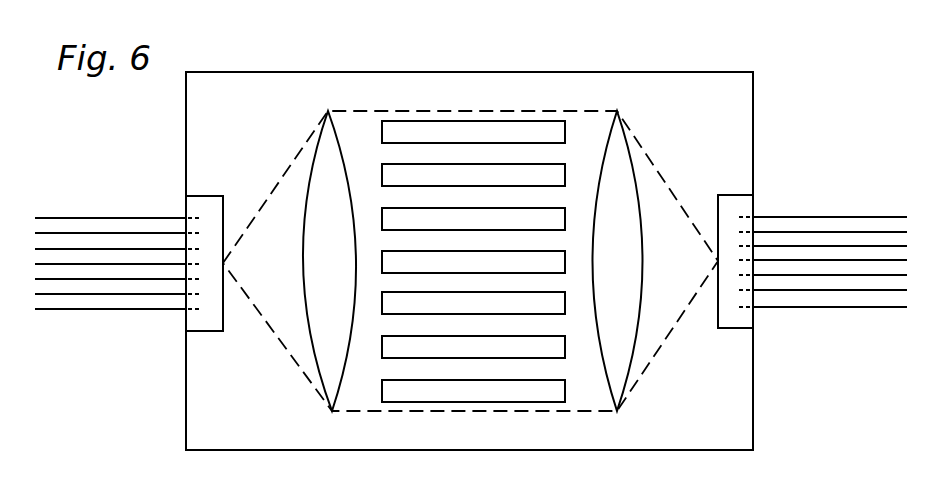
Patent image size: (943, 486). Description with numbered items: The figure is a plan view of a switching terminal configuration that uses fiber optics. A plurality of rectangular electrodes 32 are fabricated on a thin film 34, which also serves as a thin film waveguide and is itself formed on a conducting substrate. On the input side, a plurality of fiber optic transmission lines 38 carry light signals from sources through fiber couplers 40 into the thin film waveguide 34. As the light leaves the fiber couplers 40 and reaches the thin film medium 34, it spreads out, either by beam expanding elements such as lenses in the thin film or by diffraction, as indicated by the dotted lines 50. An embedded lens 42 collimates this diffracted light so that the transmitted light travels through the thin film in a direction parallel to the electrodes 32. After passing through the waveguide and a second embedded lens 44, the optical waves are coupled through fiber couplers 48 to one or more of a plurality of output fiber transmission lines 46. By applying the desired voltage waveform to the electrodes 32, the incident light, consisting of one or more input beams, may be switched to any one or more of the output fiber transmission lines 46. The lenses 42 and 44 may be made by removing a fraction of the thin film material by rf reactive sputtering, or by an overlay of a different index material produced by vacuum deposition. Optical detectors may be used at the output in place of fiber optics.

The rectangular electrodes 32 is at (498, 177).
The thin film 34 is at (583, 71).
The fiber optic transmission lines 38 is at (110, 263).
The fiber couplers 40 is at (210, 203).
The embedded lens 42 is at (333, 140).
The second embedded lens 44 is at (622, 128).
The output fiber transmission lines 46 is at (827, 247).
The fiber couplers 48 is at (727, 197).
The dotted lines 50 is at (299, 157).